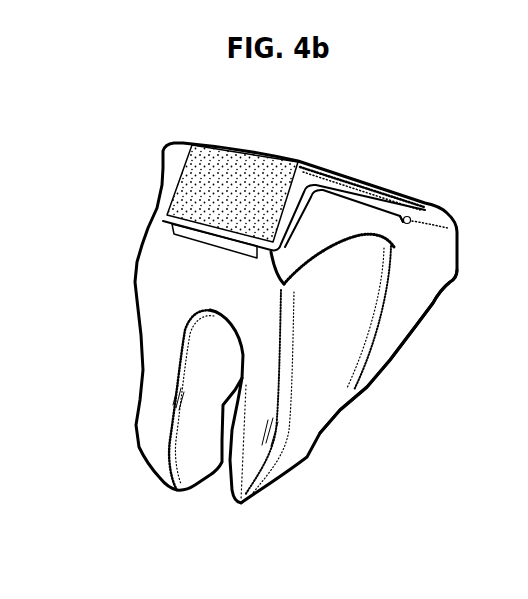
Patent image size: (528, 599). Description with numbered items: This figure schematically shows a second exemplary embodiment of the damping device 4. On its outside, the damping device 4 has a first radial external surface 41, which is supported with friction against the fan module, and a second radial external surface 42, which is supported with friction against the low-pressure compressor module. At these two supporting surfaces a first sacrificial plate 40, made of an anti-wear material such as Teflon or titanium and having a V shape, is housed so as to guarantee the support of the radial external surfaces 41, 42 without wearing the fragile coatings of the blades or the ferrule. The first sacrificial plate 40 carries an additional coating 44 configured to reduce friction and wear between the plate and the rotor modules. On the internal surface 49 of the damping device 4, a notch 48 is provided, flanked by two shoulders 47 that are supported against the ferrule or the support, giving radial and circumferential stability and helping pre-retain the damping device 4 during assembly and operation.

The damping device 4 is at (98, 478).
The first sacrificial plate 40 is at (380, 200).
The first radial external surface 41 is at (231, 186).
The second radial external surface 42 is at (357, 170).
The additional coating 44 is at (297, 163).
The shoulders 47 is at (197, 441).
The notch 48 is at (211, 356).
The internal surface 49 is at (396, 358).